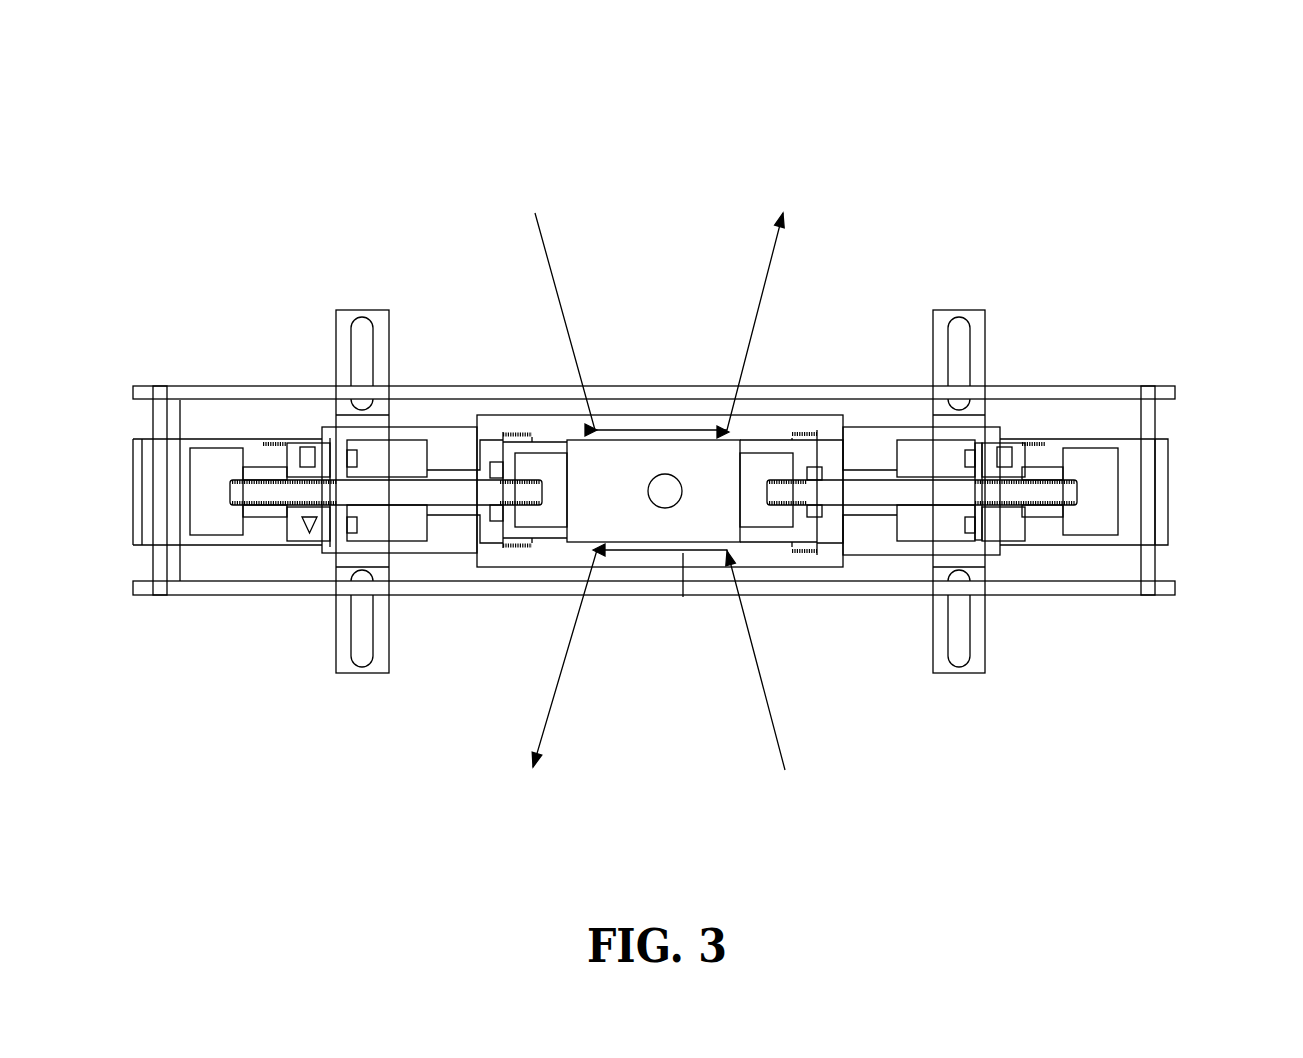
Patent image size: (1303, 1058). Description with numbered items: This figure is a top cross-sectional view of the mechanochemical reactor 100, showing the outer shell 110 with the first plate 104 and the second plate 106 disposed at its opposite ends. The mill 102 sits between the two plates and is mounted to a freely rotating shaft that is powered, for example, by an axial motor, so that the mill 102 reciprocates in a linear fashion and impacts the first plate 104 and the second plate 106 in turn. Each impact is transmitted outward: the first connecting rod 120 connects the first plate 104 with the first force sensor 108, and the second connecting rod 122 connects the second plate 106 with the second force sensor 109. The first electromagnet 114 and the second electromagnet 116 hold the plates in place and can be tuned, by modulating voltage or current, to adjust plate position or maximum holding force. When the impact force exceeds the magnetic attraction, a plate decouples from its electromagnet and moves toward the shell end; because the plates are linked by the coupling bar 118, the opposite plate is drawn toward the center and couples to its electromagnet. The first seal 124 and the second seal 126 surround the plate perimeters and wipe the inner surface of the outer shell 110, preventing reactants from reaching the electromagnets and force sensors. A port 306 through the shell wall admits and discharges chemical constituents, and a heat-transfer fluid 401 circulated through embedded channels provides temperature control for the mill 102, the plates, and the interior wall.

The mechanochemical reactor 100 is at (1202, 138).
The mill 102 is at (668, 485).
The first plate 104 is at (552, 515).
The second plate 106 is at (767, 517).
The first force sensor 108 is at (208, 513).
The second force sensor 109 is at (1087, 517).
The outer shell 110 is at (760, 423).
The first electromagnet 114 is at (397, 530).
The second electromagnet 116 is at (907, 533).
The coupling bar 118 is at (1015, 391).
The first connecting rod 120 is at (397, 487).
The second connecting rod 122 is at (857, 487).
The first seal 124 is at (567, 445).
The second seal 126 is at (747, 447).
The port 306 is at (683, 577).
The heat-transfer fluid 401 is at (542, 232).